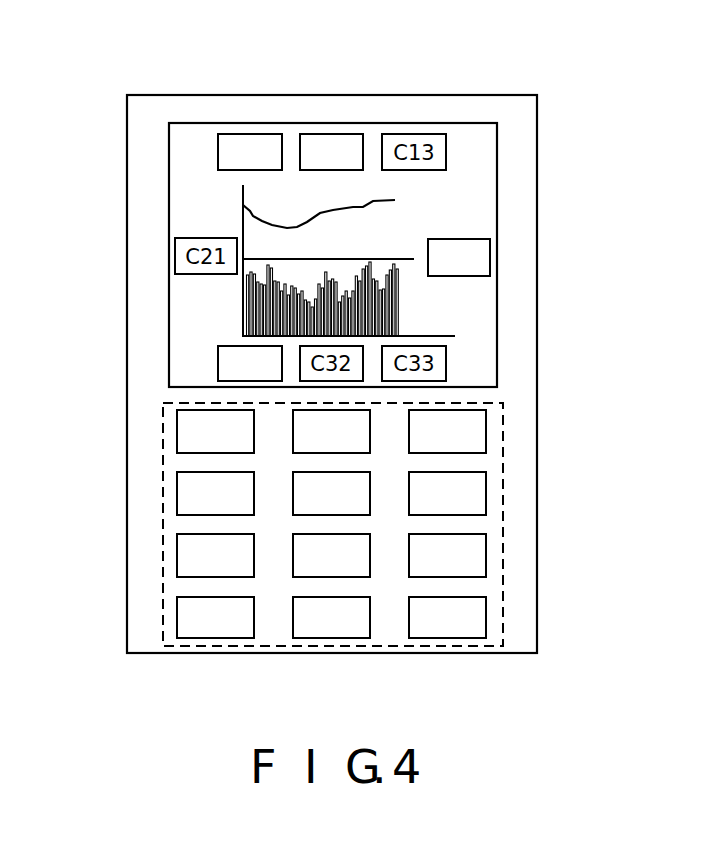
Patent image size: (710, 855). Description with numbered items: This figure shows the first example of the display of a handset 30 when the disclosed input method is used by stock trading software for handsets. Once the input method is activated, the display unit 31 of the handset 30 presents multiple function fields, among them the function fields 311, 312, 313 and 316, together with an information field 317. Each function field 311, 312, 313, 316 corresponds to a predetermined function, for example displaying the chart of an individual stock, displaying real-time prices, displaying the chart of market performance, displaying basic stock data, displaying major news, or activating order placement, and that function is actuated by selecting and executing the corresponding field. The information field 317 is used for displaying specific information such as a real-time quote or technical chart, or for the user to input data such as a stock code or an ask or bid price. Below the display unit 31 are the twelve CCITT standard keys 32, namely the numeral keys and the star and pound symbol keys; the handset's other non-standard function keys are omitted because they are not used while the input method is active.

The handset 30 is at (537, 315).
The display unit 31 is at (497, 172).
The CCITT standard keys 32 is at (503, 475).
The function field 311 is at (247, 140).
The function field 312 is at (346, 140).
The function field 313 is at (490, 258).
The function field 316 is at (218, 370).
The information field 317 is at (243, 205).